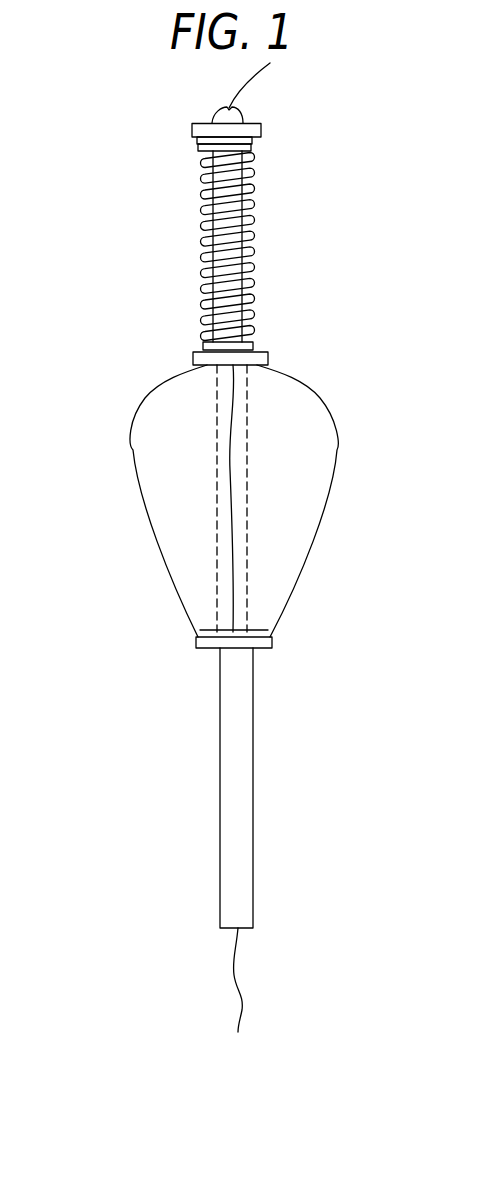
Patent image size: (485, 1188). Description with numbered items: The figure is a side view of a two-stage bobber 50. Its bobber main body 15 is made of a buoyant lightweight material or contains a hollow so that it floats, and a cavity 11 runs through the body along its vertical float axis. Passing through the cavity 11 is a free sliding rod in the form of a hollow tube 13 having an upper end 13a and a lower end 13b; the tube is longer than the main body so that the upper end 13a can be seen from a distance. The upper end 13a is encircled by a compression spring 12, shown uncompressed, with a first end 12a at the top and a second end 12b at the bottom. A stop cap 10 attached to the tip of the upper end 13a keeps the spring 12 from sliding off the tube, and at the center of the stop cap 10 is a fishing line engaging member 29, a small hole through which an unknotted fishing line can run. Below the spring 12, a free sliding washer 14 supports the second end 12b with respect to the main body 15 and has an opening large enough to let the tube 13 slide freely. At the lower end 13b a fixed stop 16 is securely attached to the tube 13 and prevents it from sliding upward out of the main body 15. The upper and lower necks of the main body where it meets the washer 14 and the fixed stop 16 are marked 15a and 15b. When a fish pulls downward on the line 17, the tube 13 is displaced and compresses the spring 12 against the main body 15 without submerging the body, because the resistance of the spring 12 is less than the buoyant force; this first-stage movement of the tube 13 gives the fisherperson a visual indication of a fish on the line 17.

The two-stage bobber 50 is at (108, 441).
The fishing line engaging member 29 is at (226, 106).
The stop cap 10 is at (243, 113).
The compression spring 12 is at (253, 175).
The first end 12a is at (202, 175).
The second end 12b is at (202, 345).
The hollow tube 13 is at (254, 220).
The upper end 13a is at (251, 258).
The lower end 13b is at (238, 760).
The free sliding washer 14 is at (266, 360).
The bobber main body 15 is at (313, 468).
The upper neck of float body 15a is at (228, 372).
The lower neck of float body 15b is at (225, 632).
The fixed stop 16 is at (262, 648).
The cavity 11 is at (240, 447).
The line 17 is at (236, 977).